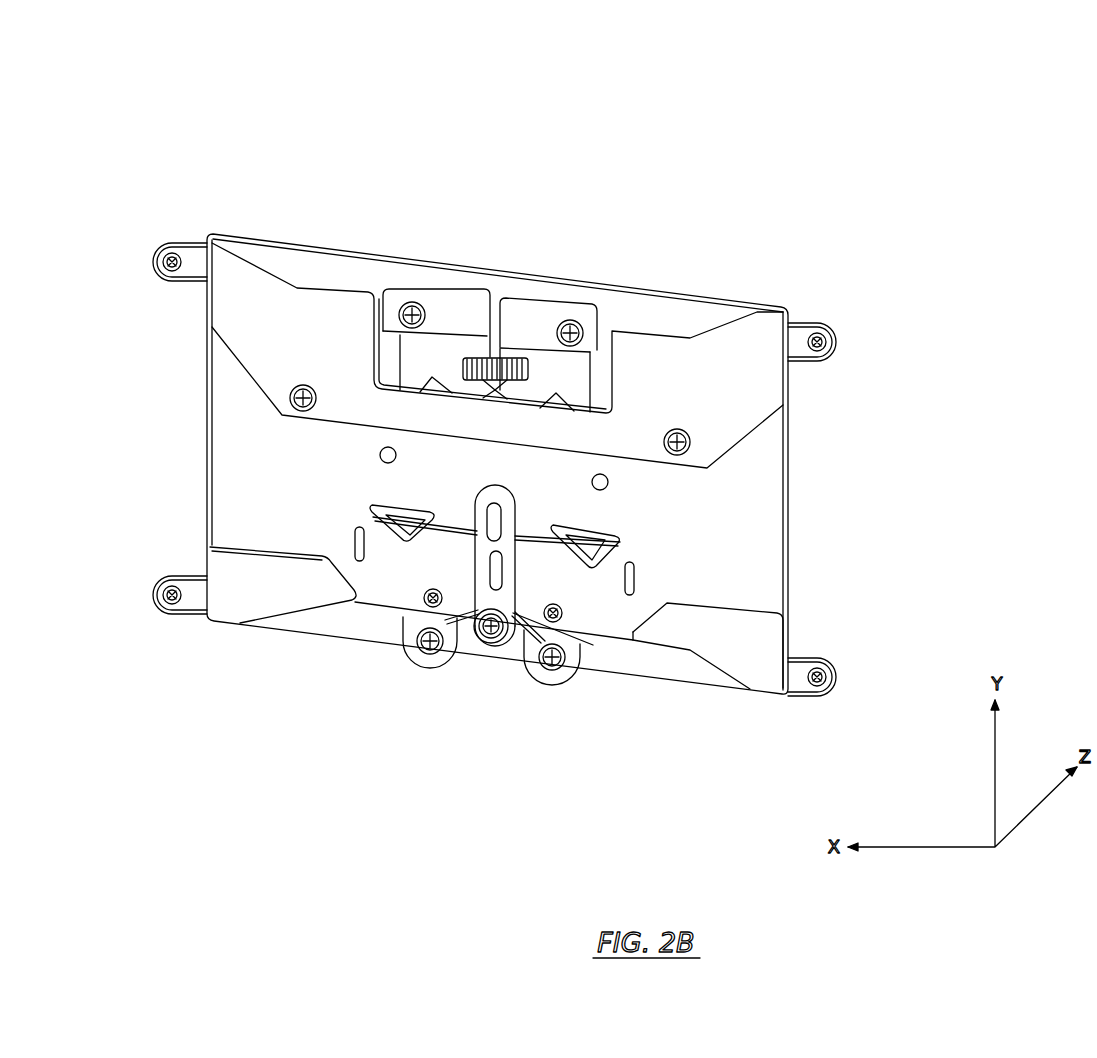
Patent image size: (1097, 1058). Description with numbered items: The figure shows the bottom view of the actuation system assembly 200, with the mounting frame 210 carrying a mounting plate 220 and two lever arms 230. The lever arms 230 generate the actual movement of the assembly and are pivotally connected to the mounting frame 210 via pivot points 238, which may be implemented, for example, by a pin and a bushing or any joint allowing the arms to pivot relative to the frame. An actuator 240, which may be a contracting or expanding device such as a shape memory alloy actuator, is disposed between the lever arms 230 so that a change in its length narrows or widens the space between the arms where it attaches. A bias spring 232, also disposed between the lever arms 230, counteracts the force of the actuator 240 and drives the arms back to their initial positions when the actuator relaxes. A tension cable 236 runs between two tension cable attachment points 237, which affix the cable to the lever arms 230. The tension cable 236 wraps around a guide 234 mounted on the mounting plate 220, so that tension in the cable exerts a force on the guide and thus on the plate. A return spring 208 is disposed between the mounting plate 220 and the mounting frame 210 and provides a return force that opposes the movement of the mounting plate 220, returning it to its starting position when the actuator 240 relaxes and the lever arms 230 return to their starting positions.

The actuation system assembly 200 is at (550, 466).
The mounting frame 210 is at (763, 352).
The mounting plate 220 is at (444, 277).
The lever arms 230 is at (713, 272).
The bias spring 232 is at (470, 357).
The actuator 240 is at (522, 318).
The guide 234 is at (520, 613).
The tension cable 236 is at (532, 643).
The tension cable attachment points 237 is at (437, 650).
The pivot points 238 is at (566, 645).
The return spring 208 is at (437, 518).